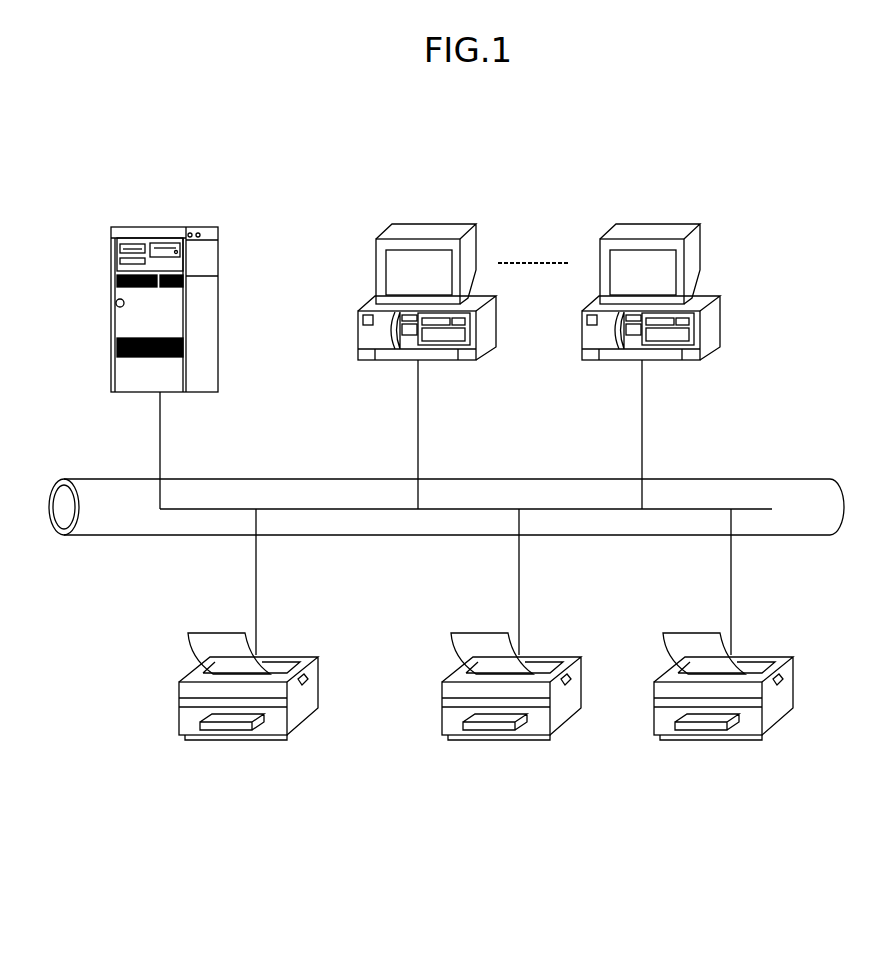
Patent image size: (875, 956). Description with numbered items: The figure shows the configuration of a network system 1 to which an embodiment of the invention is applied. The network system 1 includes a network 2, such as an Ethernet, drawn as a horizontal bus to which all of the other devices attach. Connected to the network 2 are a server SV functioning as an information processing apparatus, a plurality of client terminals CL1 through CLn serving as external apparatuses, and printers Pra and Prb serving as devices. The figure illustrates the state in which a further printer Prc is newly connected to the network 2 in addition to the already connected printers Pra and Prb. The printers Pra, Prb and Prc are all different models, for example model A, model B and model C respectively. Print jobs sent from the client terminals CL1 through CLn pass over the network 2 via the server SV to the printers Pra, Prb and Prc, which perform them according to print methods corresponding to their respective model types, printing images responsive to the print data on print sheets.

The network system 1 is at (750, 151).
The network 2 is at (738, 478).
The server SV is at (158, 225).
The client terminal CL1 is at (428, 222).
The client terminal CLn is at (651, 222).
The printer Pra is at (233, 741).
The printer Prb is at (496, 741).
The printer Prc is at (708, 741).